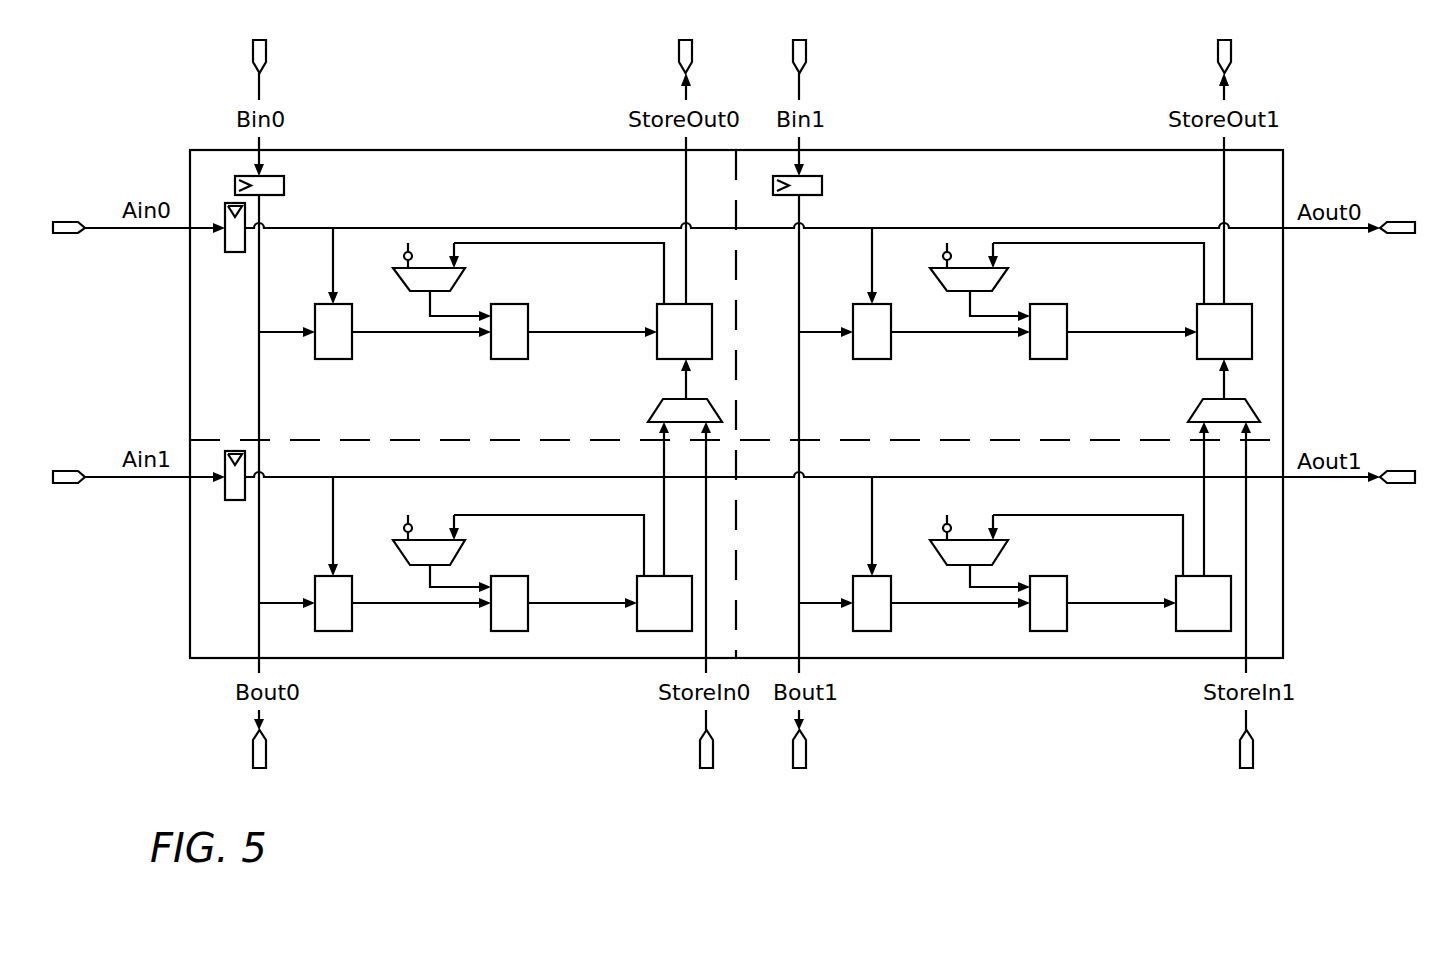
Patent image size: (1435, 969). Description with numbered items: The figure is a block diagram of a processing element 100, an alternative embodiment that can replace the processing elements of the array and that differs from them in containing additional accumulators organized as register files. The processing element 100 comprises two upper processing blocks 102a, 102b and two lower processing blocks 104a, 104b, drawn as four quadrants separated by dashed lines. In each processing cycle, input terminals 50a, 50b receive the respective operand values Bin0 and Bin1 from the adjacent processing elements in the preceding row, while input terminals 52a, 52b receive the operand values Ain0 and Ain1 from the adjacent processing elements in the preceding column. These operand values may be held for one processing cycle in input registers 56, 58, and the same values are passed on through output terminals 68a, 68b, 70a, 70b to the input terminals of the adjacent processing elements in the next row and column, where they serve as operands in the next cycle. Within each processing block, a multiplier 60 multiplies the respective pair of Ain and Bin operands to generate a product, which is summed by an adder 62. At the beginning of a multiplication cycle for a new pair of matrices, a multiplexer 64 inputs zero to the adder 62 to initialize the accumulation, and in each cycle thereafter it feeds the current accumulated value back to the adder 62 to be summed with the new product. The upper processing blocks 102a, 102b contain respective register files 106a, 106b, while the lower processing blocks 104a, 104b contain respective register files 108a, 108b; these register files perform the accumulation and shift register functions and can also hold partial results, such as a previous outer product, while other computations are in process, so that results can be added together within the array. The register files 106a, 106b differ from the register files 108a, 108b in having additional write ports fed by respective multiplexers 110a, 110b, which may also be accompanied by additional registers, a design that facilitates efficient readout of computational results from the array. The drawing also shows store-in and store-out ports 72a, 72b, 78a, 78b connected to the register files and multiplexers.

The processing element 100 is at (390, 150).
The upper processing block 102a is at (463, 295).
The upper processing block 102b is at (1009, 295).
The lower processing block 104a is at (463, 549).
The lower processing block 104b is at (1009, 549).
The input terminal 50a is at (266, 50).
The input terminal 50b is at (806, 50).
The input terminal 52a is at (70, 234).
The input terminal 52b is at (70, 483).
The input register 56 is at (284, 186).
The input register 58 is at (236, 252).
The multiplier 60 is at (334, 359).
The adder 62 is at (510, 359).
The multiplexer 64 is at (457, 282).
The output terminal 68a is at (266, 750).
The output terminal 68b is at (806, 750).
The output terminal 70a is at (1405, 234).
The output terminal 70b is at (1405, 483).
The store input port 0 72a is at (700, 750).
The store input port 1 72b is at (1240, 750).
The store output port 0 78a is at (679, 50).
The store output port 1 78b is at (1218, 50).
The register file 106a is at (657, 356).
The register file 106b is at (1197, 356).
The register file 108a is at (637, 629).
The register file 108b is at (1176, 580).
The multiplexer 110a is at (663, 408).
The multiplexer 110b is at (1203, 408).